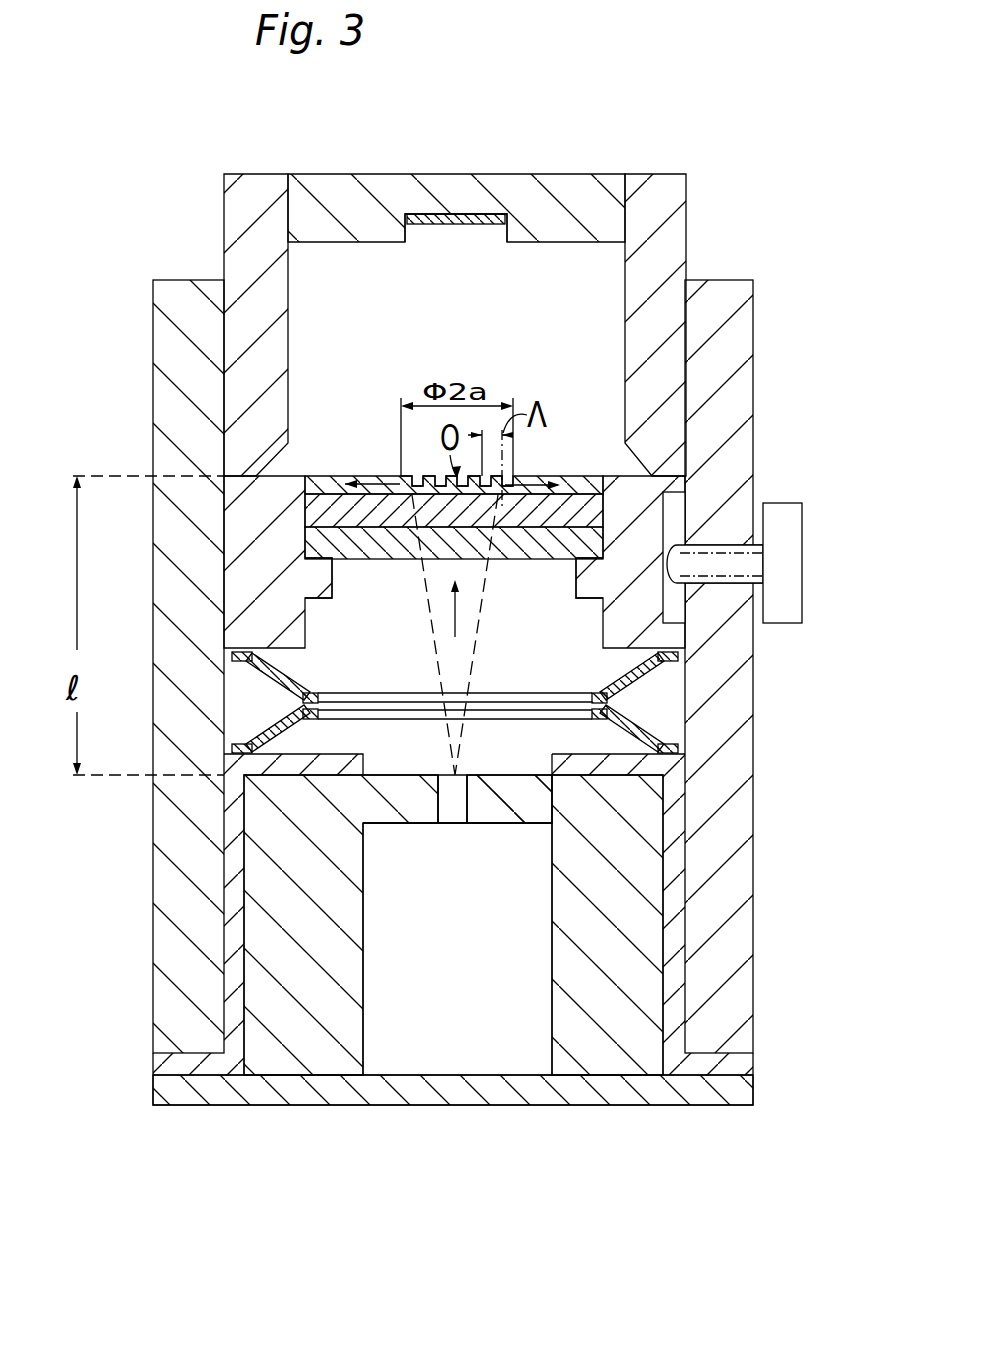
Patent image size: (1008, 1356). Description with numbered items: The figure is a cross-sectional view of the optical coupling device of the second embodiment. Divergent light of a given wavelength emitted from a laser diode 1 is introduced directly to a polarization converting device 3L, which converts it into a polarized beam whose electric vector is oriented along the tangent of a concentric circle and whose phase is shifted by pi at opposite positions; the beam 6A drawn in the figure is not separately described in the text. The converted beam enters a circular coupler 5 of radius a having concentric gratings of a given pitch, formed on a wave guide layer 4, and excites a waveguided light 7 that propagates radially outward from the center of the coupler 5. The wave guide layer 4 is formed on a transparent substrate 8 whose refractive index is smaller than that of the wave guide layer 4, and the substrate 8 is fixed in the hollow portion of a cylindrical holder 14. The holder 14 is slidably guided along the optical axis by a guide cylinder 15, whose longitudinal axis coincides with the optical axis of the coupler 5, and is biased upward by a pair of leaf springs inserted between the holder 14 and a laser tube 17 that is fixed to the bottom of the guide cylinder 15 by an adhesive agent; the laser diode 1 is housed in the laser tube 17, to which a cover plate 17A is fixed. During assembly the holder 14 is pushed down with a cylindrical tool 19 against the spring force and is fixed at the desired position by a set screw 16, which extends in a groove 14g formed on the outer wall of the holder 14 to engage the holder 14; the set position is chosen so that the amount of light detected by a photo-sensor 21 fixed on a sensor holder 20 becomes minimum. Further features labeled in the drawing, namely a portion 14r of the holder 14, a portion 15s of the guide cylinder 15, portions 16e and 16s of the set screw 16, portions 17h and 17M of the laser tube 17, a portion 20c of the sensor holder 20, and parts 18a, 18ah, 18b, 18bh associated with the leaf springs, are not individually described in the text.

The laser diode 1 is at (447, 830).
The polarization converting device 3L is at (306, 545).
The wave guide layer 4 is at (461, 465).
The circular coupler 5 is at (418, 478).
The light beam 6A is at (457, 614).
The waveguided light 7 is at (400, 483).
The transparent substrate 8 is at (605, 512).
The cylindrical holder 14 is at (257, 528).
The groove 14g is at (664, 540).
The holder ledge 14r is at (306, 560).
The guide cylinder 15 is at (205, 318).
The screw hole 15s is at (722, 588).
The set screw 16 is at (780, 557).
The screw head 16e is at (766, 503).
The screw shaft 16s is at (730, 567).
The laser tube 17 is at (245, 942).
The cover plate 17A is at (732, 1095).
The base hole 17h is at (545, 772).
The base block 17M is at (308, 1048).
The upper diaphragm 18a is at (640, 670).
The upper diaphragm hub 18ah is at (587, 698).
The lower diaphragm 18b is at (645, 738).
The lower diaphragm hub 18bh is at (587, 713).
The cylindrical tool 19 is at (265, 240).
The sensor holder 20 is at (572, 197).
The cover recess 20c is at (432, 213).
The photo-sensor 21 is at (498, 213).